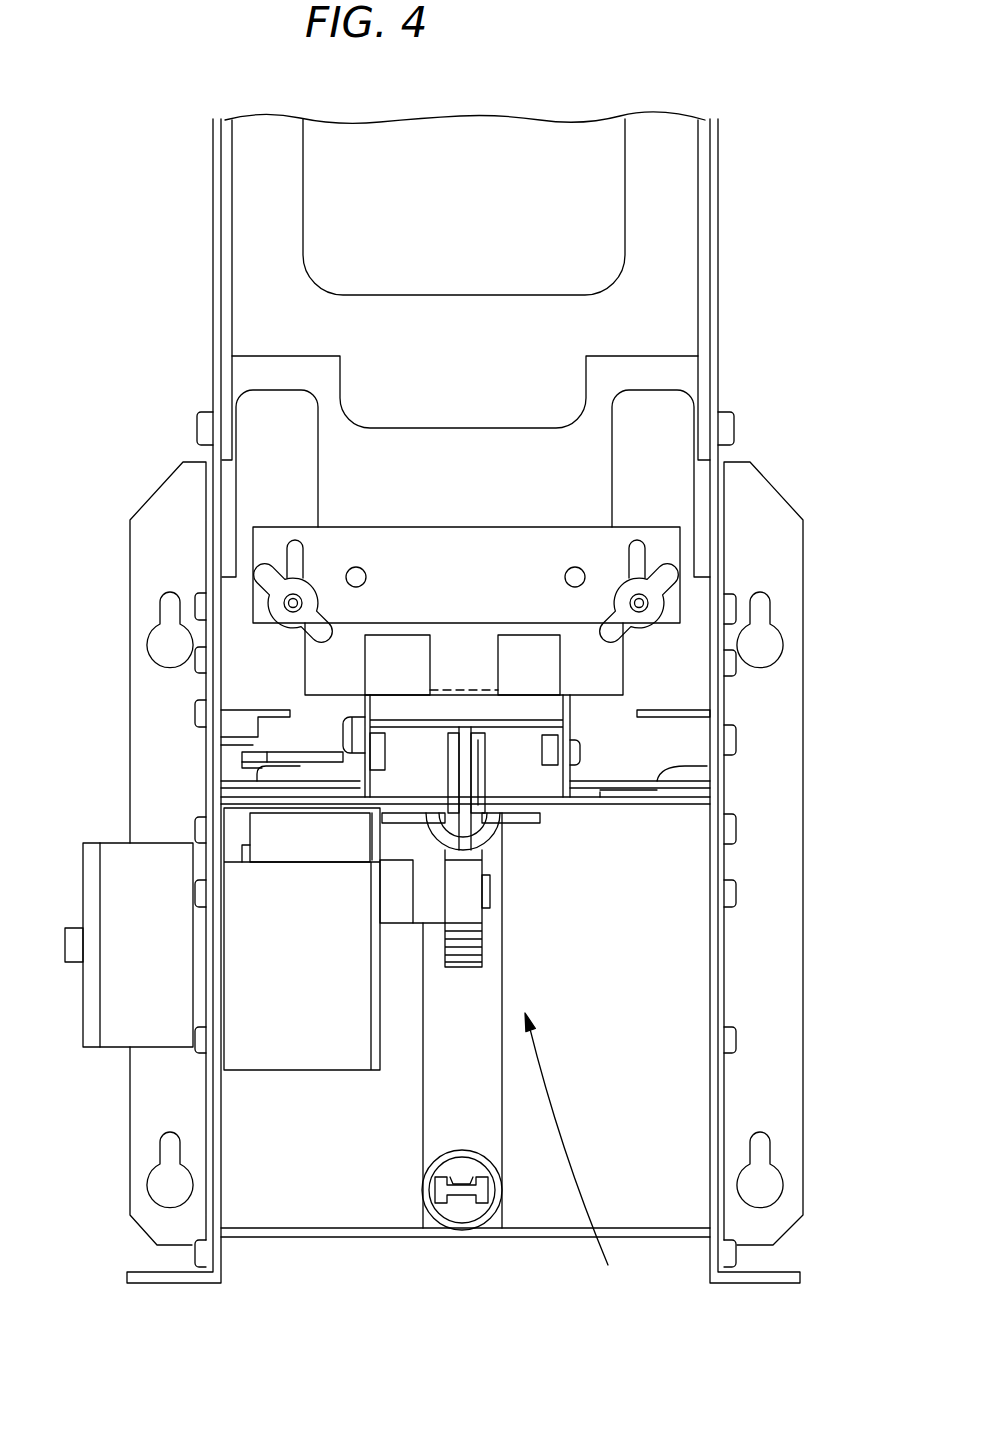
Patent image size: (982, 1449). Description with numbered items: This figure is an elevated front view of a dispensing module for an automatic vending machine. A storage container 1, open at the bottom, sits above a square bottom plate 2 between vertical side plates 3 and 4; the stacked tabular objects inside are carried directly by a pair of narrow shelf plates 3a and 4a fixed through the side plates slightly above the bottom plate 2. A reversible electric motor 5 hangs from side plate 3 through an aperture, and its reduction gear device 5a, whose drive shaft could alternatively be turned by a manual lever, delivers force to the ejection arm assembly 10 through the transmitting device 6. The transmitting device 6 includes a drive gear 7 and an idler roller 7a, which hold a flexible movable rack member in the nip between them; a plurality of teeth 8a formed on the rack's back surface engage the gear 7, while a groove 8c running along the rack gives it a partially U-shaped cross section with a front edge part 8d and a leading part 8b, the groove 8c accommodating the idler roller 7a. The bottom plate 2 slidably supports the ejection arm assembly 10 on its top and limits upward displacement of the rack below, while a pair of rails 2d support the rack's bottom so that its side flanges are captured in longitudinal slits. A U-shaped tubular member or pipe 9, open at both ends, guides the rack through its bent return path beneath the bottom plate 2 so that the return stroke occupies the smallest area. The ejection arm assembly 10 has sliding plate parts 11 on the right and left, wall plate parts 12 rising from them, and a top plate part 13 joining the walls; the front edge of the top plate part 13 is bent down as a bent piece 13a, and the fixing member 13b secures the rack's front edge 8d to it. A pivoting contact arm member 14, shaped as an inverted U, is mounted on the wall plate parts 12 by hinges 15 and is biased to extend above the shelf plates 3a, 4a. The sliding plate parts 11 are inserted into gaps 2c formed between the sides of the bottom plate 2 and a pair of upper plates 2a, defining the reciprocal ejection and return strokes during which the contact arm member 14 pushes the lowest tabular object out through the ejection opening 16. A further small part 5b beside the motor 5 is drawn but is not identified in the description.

The storage container 1 is at (509, 139).
The bottom plate 2 is at (683, 806).
The upper plates 2a is at (320, 775).
The gaps 2c is at (665, 792).
The rails 2d is at (345, 830).
The side plate 3 is at (200, 1106).
The shelf plate 3a is at (225, 712).
The side plate 4 is at (725, 964).
The shelf plate 4a is at (670, 710).
The reversible electric motor 5 is at (123, 1020).
The reduction gear device 5a is at (343, 852).
The motor terminal 5b is at (68, 962).
The transmitting device 6 is at (569, 1155).
The drive gear 7 is at (460, 968).
The idler roller 7a is at (492, 778).
The teeth 8a is at (430, 1172).
The leading part 8b is at (437, 1197).
The groove 8c is at (455, 1200).
The front edge part 8d is at (513, 835).
The tubular member 9 is at (420, 1094).
The ejection arm assembly 10 is at (587, 743).
The sliding plate parts 11 is at (340, 775).
The wall plate parts 12 is at (345, 738).
The top plate part 13 is at (425, 720).
The bent piece 13a is at (478, 750).
The fixing member 13b is at (480, 833).
The pivoting contact arm member 14 is at (472, 712).
The hinges 15 is at (242, 756).
The ejection opening 16 is at (460, 665).